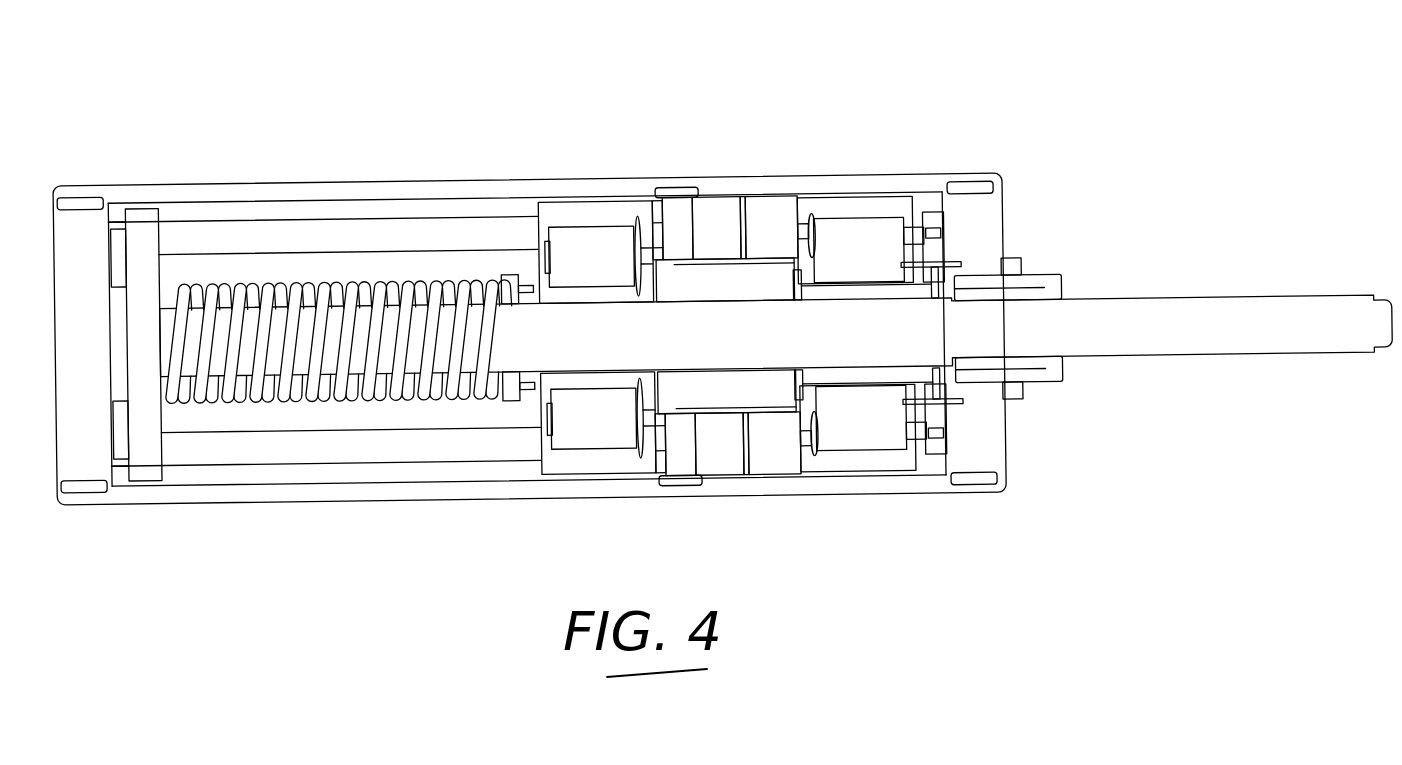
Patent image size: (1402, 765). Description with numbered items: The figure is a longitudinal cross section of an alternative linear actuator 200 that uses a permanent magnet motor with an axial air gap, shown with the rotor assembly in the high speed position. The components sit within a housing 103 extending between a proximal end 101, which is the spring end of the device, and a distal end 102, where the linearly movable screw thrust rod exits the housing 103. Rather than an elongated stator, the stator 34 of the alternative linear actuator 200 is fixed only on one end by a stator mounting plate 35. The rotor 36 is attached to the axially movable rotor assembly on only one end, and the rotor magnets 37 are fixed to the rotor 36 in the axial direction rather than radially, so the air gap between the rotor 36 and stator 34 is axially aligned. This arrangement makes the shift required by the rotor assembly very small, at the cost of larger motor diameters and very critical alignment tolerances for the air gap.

The alternative linear actuator 200 is at (722, 265).
The proximal end 101 is at (92, 296).
The distal end 102 is at (1002, 287).
The housing 103 is at (529, 297).
The stator 34 is at (733, 191).
The stator mounting plate 35 is at (688, 192).
The rotor 36 is at (793, 186).
The rotor magnets 37 is at (783, 172).